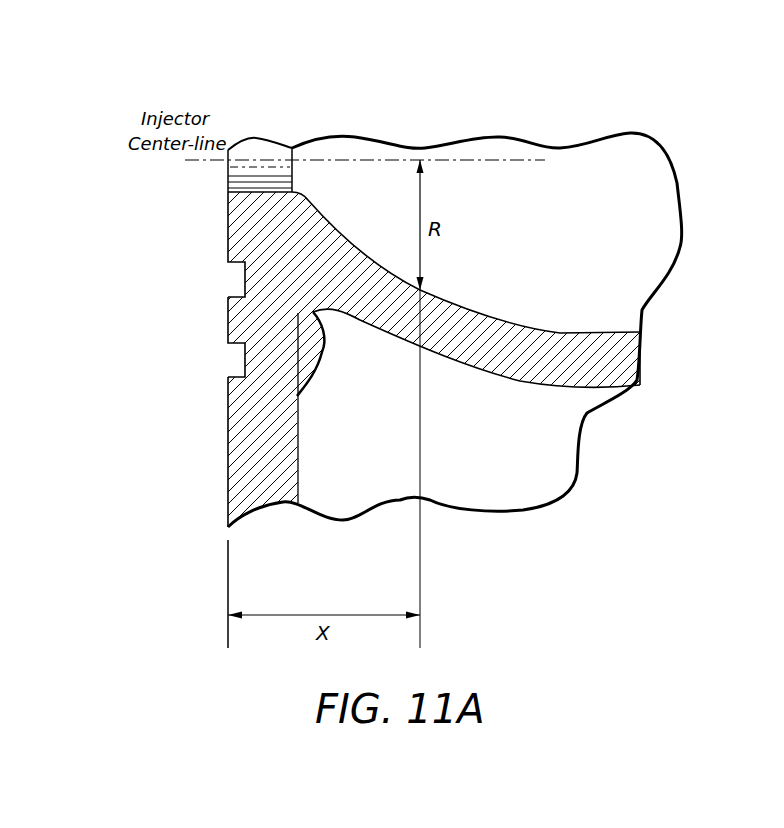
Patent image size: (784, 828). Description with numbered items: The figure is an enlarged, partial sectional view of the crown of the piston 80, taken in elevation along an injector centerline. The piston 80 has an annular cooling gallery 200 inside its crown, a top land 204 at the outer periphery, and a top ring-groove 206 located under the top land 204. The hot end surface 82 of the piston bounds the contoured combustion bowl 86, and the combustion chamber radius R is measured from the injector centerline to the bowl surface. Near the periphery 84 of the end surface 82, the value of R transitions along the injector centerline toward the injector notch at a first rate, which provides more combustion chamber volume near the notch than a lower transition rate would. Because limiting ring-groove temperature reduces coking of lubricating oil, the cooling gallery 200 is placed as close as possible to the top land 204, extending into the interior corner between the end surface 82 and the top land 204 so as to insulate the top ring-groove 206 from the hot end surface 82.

The periphery of the end surface 84 is at (256, 152).
The end surface 82 is at (360, 132).
The bowl 86 is at (575, 287).
The top land 204 is at (228, 235).
The top ring-groove 206 is at (236, 278).
The annular cooling gallery 200 is at (298, 397).
The piston 80 is at (228, 470).